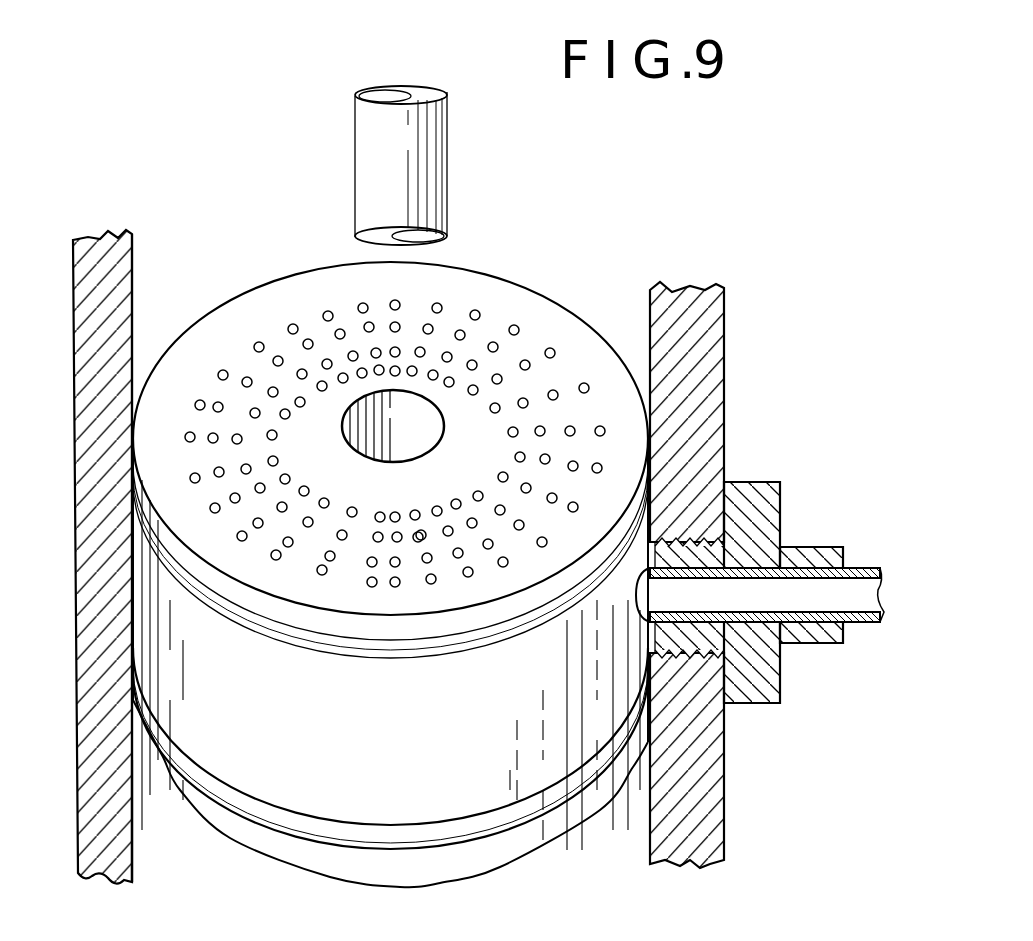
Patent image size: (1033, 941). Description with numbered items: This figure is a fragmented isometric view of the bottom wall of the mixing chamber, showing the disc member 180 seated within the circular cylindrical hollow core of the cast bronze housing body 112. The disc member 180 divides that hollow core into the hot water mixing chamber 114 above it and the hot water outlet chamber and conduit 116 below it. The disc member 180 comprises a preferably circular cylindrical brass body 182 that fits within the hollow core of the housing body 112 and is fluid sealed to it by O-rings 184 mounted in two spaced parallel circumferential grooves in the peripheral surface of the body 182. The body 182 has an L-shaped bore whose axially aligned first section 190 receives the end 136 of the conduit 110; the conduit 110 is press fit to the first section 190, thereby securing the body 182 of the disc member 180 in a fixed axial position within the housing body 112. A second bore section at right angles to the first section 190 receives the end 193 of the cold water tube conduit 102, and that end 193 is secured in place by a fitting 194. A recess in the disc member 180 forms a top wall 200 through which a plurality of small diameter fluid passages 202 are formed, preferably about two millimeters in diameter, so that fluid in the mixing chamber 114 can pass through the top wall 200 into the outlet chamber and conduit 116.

The cold water tube conduit 102 is at (868, 568).
The conduit 110 is at (404, 166).
The housing body 112 is at (73, 290).
The hot water mixing chamber 114 is at (133, 283).
The hot water outlet chamber and conduit 116 is at (133, 848).
The end of conduit 136 is at (352, 242).
The disc member 180 is at (578, 258).
The body 182 is at (470, 880).
The O-rings 184 is at (367, 653).
The first section of bore 190 is at (408, 446).
The end of cold water conduit 193 is at (813, 645).
The fitting 194 is at (780, 482).
The top wall 200 is at (450, 273).
The fluid passages 202 is at (280, 319).